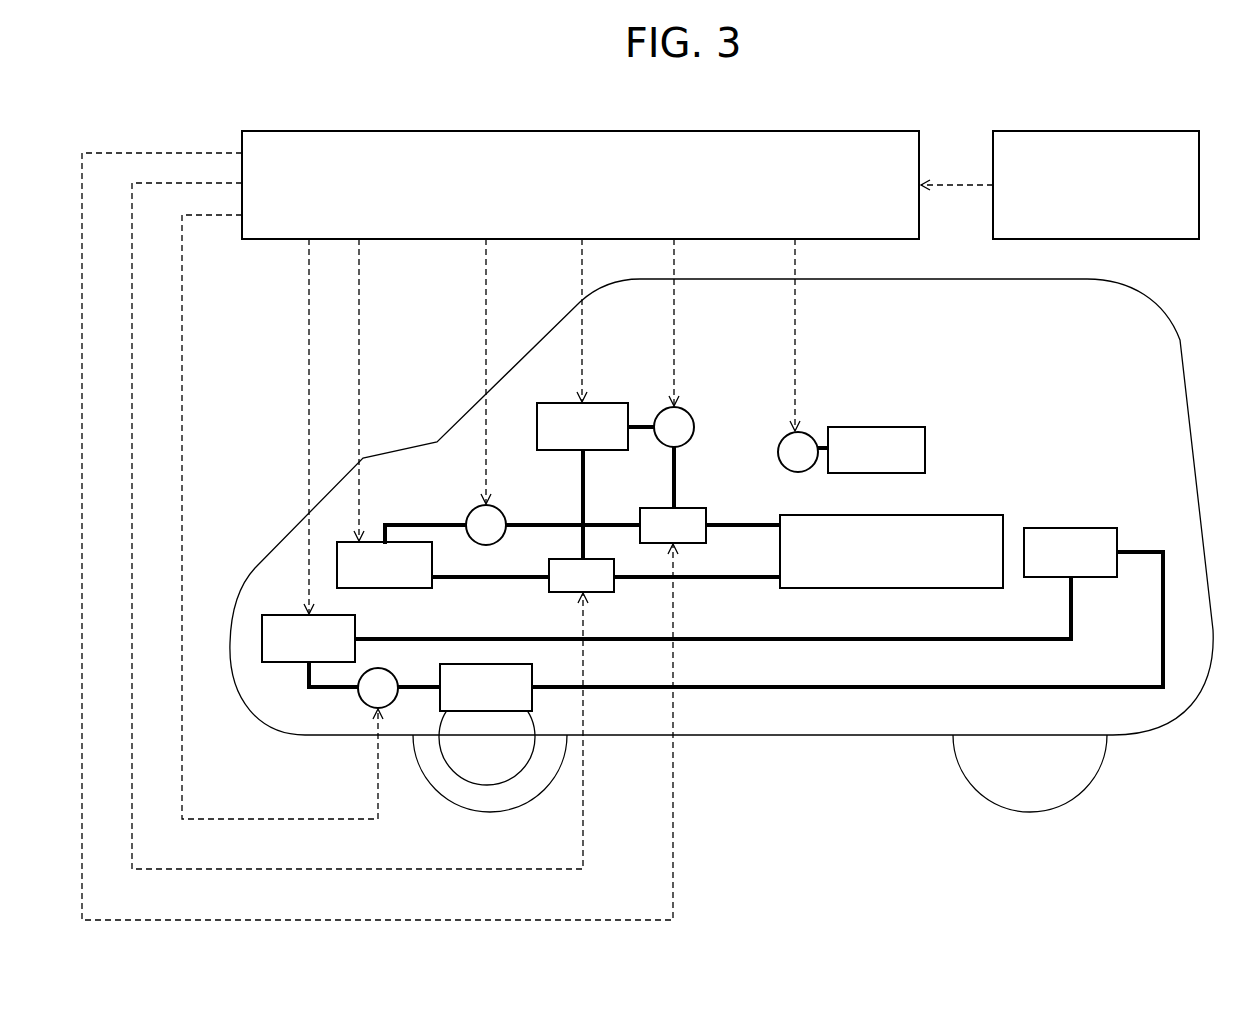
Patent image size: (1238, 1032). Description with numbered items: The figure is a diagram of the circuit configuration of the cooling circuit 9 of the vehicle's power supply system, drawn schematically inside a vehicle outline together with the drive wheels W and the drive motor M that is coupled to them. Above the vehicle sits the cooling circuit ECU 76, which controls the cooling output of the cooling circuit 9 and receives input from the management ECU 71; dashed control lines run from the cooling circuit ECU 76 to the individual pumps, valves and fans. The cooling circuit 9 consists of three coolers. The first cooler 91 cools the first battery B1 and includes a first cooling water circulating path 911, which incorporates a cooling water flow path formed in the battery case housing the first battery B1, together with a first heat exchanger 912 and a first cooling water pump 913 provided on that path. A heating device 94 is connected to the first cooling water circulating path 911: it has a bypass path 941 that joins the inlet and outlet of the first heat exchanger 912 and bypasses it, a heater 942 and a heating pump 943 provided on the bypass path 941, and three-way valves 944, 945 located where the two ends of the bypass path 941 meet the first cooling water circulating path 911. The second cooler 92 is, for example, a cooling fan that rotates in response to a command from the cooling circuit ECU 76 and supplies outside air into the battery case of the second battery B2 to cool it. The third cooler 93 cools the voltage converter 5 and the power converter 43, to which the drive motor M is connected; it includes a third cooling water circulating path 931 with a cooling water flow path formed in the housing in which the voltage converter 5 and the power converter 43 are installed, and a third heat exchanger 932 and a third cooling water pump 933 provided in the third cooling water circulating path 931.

The cooling circuit ECU 76 is at (867, 131).
The management ECU 71 is at (1114, 131).
The cooling circuit 9 is at (266, 386).
The first cooler 91 is at (440, 440).
The first cooling water circulating path 911 is at (745, 580).
The first heat exchanger 912 is at (376, 543).
The first cooling water pump 913 is at (471, 511).
The first battery B1 is at (955, 516).
The heating device 94 is at (551, 380).
The bypass path 941 is at (581, 481).
The heater 942 is at (608, 403).
The heating pump 943 is at (689, 411).
The three-way valve 944 is at (701, 509).
The three-way valve 945 is at (603, 559).
The second cooler 92 is at (813, 433).
The second battery B2 is at (895, 428).
The third cooler 93 is at (271, 568).
The third cooling water circulating path 931 is at (848, 690).
The third heat exchanger 932 is at (287, 648).
The third cooling water pump 933 is at (373, 705).
The voltage converter 5 is at (1087, 528).
The power converter 43 is at (490, 664).
The drive motor M is at (500, 774).
The drive wheels W is at (439, 782).